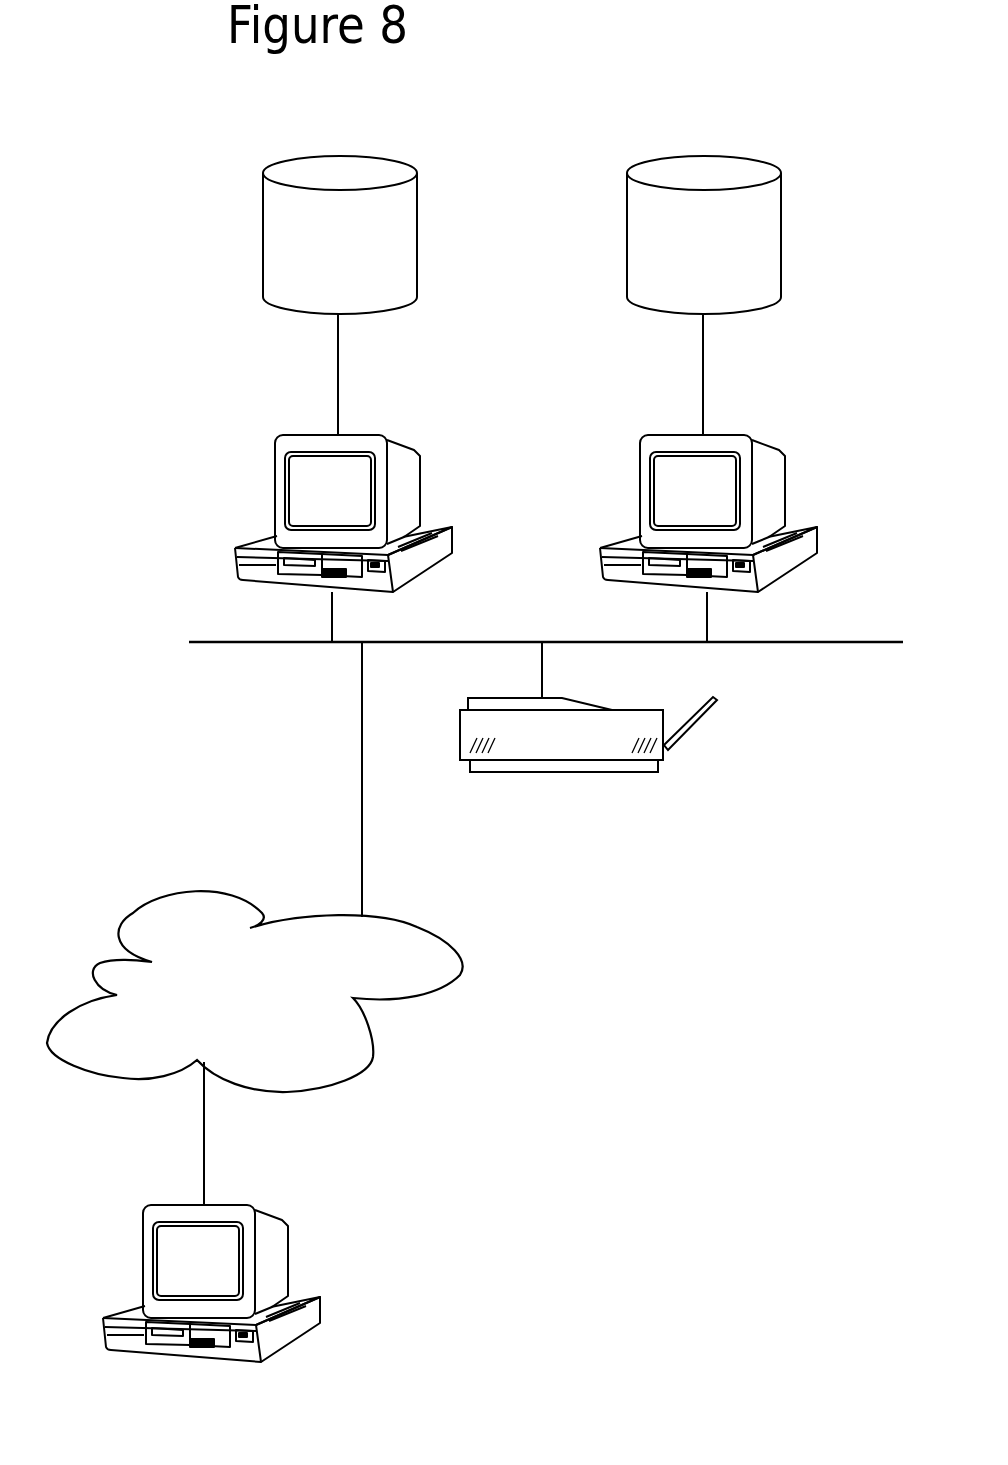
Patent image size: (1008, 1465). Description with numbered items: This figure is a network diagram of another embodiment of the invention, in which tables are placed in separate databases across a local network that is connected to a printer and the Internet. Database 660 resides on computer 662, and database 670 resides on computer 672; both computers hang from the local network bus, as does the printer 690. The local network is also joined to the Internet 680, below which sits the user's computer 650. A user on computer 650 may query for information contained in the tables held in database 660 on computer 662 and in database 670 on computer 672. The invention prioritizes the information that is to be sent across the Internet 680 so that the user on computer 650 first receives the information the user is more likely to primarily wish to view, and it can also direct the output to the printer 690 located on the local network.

The computer 650 is at (290, 1280).
The database 660 is at (263, 190).
The computer 662 is at (233, 571).
The database 670 is at (780, 227).
The computer 672 is at (788, 498).
The Internet 680 is at (373, 1053).
The printer 690 is at (617, 772).